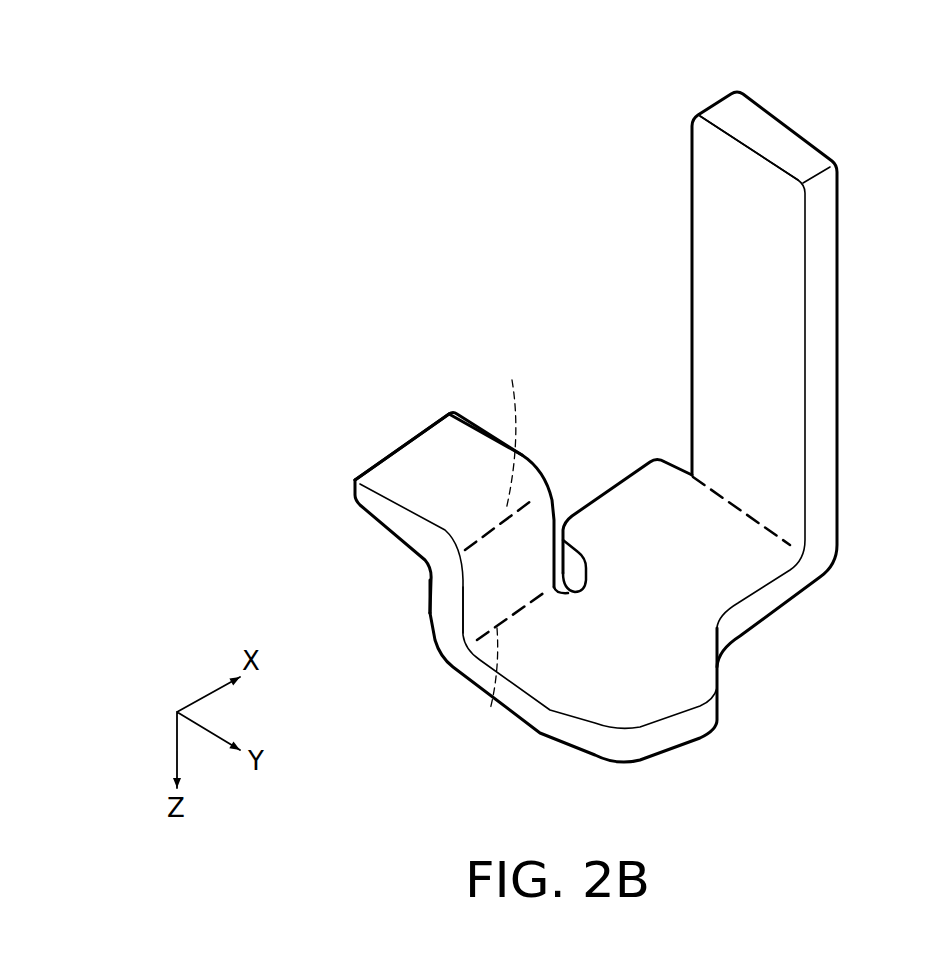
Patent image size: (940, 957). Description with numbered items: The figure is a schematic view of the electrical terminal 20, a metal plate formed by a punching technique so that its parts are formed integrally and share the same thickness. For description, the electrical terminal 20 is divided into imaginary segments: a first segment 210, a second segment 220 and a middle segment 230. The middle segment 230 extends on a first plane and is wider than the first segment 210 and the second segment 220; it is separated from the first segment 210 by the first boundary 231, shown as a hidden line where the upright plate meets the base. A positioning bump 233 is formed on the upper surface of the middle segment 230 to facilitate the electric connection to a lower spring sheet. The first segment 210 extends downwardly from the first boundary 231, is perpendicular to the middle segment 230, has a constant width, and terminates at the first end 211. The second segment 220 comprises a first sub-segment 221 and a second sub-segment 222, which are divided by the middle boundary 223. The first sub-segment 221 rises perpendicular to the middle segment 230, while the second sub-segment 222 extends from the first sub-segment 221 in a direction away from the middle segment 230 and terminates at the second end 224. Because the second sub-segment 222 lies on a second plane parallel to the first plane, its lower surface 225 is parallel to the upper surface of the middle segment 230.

The electrical terminal 20 is at (210, 90).
The first segment 210 is at (680, 300).
The first end 211 is at (767, 130).
The second segment 220 is at (380, 537).
The first sub-segment 221 is at (493, 582).
The second sub-segment 222 is at (420, 475).
The middle boundary 223 is at (509, 429).
The second end 224 is at (403, 453).
The lower surface 225 is at (440, 452).
The middle segment 230 is at (712, 718).
The first boundary 231 is at (777, 533).
The positioning bump 233 is at (490, 710).